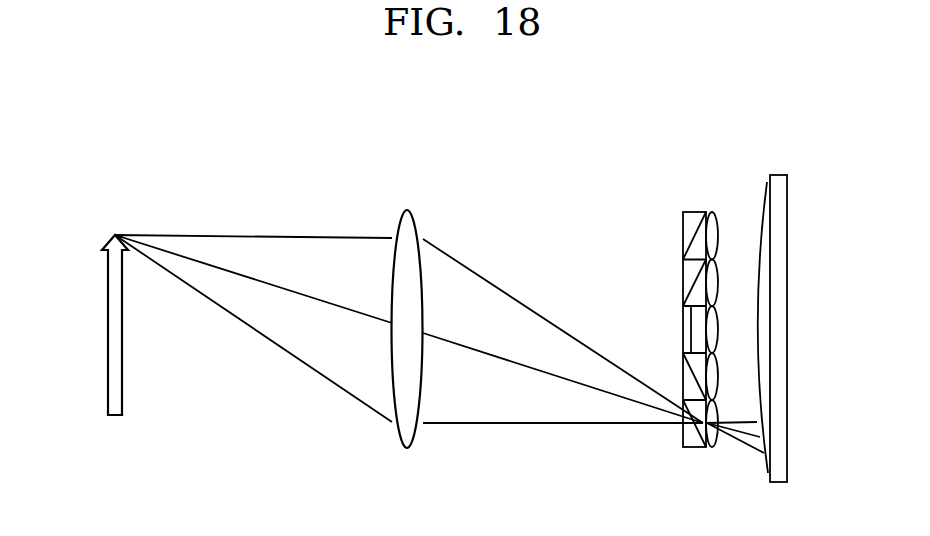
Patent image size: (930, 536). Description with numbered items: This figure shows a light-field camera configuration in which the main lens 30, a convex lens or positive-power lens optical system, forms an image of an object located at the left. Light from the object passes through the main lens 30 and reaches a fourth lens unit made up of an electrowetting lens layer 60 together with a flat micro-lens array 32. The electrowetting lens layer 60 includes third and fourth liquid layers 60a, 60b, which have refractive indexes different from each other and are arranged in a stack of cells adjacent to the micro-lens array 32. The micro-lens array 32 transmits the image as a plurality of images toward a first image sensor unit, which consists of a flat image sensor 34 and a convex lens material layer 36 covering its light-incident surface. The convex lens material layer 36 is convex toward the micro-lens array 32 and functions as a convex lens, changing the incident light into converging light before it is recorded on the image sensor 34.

The main lens 30 is at (407, 210).
The micro-lens array 32 is at (713, 212).
The image sensor 34 is at (778, 175).
The convex lens material layer 36 is at (765, 208).
The electrowetting lens layer 60 is at (668, 237).
The third liquid layer 60a is at (697, 250).
The fourth liquid layer 60b is at (688, 218).